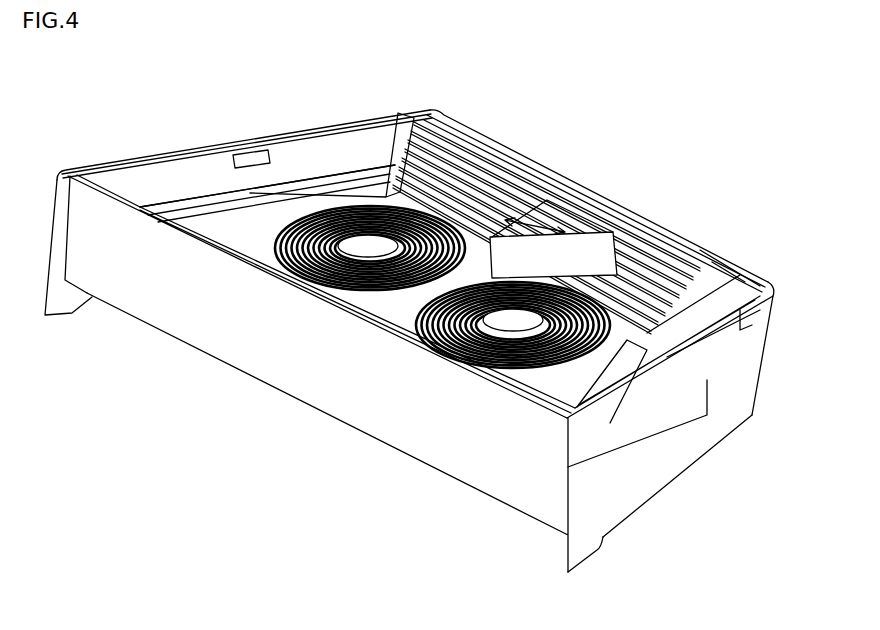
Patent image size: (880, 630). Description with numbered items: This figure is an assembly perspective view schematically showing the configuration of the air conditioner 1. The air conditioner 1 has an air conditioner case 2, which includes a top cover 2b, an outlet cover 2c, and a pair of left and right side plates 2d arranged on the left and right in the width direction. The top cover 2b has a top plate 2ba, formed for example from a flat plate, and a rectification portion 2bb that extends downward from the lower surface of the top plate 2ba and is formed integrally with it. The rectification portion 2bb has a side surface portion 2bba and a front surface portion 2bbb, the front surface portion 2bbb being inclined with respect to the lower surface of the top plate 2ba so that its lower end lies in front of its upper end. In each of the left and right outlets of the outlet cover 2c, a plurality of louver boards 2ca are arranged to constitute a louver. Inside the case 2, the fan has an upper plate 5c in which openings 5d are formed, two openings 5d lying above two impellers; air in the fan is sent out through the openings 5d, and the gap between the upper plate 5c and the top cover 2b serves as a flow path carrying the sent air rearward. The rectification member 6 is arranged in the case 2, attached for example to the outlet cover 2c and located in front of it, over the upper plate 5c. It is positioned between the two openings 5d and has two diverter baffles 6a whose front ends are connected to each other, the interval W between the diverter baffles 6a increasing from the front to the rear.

The air conditioner 1 is at (626, 123).
The air conditioner case 2 is at (438, 99).
The top cover 2b is at (270, 75).
The top plate 2ba is at (200, 203).
The rectification portion 2bb is at (300, 101).
The front surface portion 2bbb is at (220, 207).
The side surface portion 2bba is at (287, 187).
The outlet cover 2c is at (670, 247).
The louver boards 2ca is at (710, 257).
The side plates 2d is at (67, 300).
The upper plate 5c is at (380, 197).
The opening 5d is at (413, 223).
The rectification member 6 is at (587, 250).
The diverter baffles 6a is at (518, 230).
The interval W is at (560, 230).